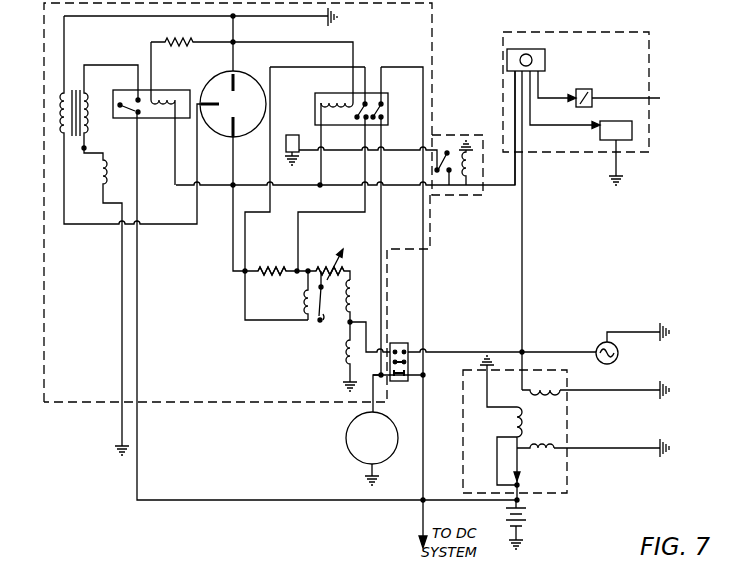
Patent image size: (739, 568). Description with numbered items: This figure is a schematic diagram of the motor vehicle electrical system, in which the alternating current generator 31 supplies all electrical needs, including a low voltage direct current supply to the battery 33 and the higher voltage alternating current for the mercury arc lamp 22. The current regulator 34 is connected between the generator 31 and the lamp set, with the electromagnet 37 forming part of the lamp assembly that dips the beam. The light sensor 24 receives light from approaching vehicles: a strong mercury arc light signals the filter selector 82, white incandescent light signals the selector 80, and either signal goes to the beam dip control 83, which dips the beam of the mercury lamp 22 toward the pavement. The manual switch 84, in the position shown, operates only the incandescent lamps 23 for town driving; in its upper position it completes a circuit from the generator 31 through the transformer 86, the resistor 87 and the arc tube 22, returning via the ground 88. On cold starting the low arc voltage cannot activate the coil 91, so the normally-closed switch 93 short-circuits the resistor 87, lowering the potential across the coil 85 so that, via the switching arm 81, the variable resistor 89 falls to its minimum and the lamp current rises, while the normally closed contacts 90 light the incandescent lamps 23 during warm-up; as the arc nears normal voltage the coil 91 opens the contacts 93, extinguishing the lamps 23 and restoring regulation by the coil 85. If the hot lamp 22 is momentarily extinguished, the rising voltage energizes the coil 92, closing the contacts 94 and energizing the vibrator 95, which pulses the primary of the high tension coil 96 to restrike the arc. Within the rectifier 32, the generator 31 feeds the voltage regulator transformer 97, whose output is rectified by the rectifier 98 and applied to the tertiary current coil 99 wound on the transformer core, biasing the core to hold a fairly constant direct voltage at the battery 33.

The mercury arc lamp 22 is at (219, 137).
The incandescent lamps 23 is at (346, 441).
The light sensor 24 is at (545, 60).
The alternating current generator 31 is at (600, 348).
The rectifier 32 is at (566, 497).
The battery 33 is at (528, 521).
The current regulator 34 is at (78, 405).
The electromagnet 37 is at (292, 135).
The selector 80 is at (588, 94).
The switching arm 81 is at (320, 321).
The filter selector 82 is at (601, 136).
The beam dip control 83 is at (458, 198).
The manual switch 84 is at (399, 343).
The coil 85 is at (305, 315).
The transformer 86 is at (351, 318).
The resistor 87 is at (268, 278).
The ground 88 is at (339, 18).
The variable resistor 89 is at (338, 266).
The normally closed contacts 90 is at (383, 93).
The coil 91 is at (334, 100).
The coil 92 is at (165, 110).
The normally-closed switch 93 is at (366, 92).
The contacts 94 is at (127, 113).
The vibrator 95 is at (86, 158).
The high tension coil 96 is at (60, 109).
The voltage regulator transformer 97 is at (557, 389).
The rectifier 98 is at (520, 478).
The tertiary current coil 99 is at (512, 420).